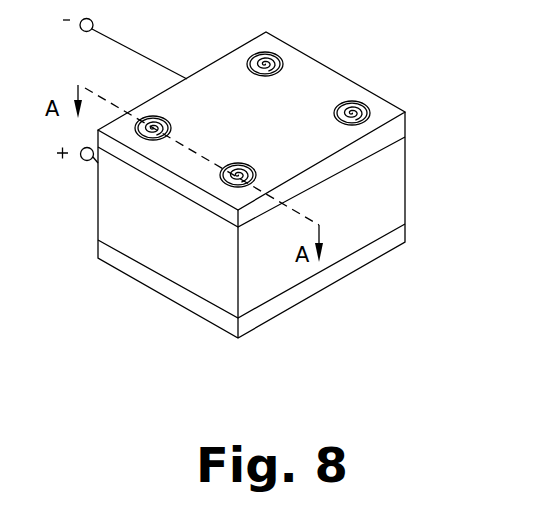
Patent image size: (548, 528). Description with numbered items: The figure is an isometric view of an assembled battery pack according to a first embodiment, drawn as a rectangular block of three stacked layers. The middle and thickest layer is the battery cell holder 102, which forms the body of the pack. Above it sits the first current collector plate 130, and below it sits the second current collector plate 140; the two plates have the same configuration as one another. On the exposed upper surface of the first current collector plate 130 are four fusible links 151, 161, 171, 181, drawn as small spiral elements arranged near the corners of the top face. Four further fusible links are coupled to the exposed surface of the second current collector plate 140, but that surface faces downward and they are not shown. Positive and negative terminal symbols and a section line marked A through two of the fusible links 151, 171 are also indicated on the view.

The battery cell holder 102 is at (377, 190).
The first current collector plate 130 is at (377, 138).
The second current collector plate 140 is at (377, 248).
The fusible link 151 is at (169, 126).
The fusible link 161 is at (278, 55).
The fusible link 171 is at (243, 167).
The fusible link 181 is at (366, 103).